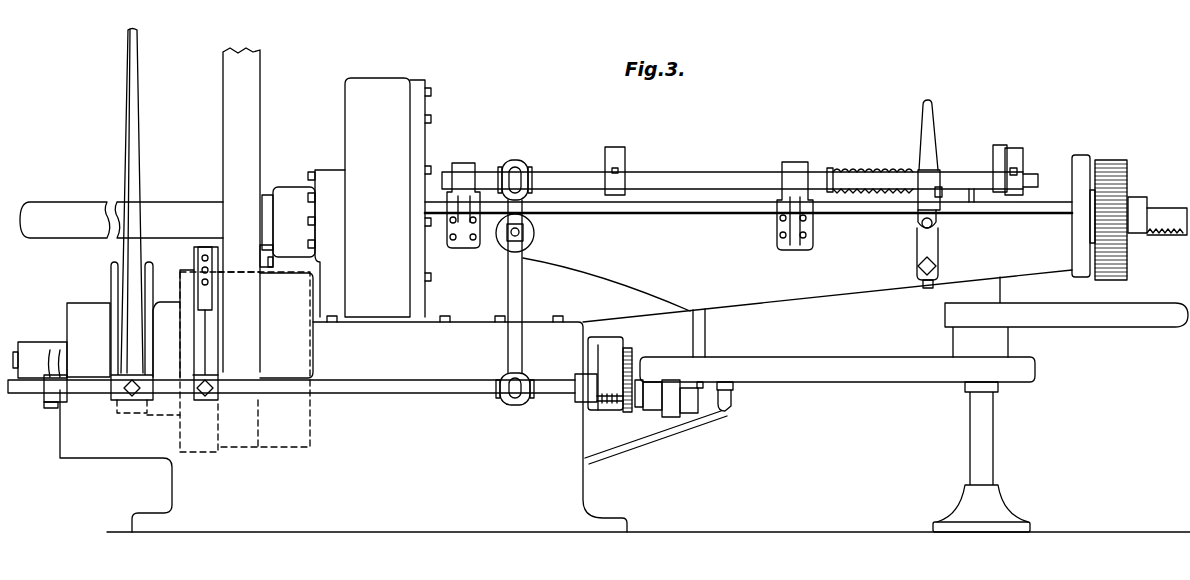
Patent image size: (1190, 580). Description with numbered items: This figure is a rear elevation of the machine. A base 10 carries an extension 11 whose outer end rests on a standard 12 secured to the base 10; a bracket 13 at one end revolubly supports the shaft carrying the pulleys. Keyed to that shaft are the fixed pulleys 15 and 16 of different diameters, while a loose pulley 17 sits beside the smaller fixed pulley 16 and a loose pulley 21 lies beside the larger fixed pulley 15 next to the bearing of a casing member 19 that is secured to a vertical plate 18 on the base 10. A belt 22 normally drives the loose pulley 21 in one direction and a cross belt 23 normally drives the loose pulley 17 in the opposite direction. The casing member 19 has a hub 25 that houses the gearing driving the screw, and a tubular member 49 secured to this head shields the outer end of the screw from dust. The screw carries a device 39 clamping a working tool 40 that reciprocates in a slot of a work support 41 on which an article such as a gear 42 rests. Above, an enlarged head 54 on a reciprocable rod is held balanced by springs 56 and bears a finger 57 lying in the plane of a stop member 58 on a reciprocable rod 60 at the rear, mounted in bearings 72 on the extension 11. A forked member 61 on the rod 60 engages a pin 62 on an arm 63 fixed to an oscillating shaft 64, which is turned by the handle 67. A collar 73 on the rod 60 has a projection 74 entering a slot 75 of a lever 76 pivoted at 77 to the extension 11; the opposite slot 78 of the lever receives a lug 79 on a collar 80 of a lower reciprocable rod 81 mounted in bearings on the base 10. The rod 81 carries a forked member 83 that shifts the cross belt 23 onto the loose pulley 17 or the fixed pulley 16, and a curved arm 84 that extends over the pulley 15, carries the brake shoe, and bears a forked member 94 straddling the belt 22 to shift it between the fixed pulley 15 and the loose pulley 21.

The base 10 is at (585, 496).
The extension 11 is at (824, 295).
The standard 12 is at (994, 441).
The bracket 13 is at (30, 345).
The pulley 15 is at (190, 452).
The pulley 16 is at (167, 302).
The pulley 17 is at (80, 311).
The vertical plate 18 is at (427, 101).
The casing member 19 is at (377, 86).
The loose pulley 21 is at (298, 348).
The belt 22 is at (261, 99).
The cross belt 23 is at (139, 175).
The hub 25 is at (329, 172).
The device 39 is at (955, 192).
The working tool 40 is at (1161, 216).
The work support 41 is at (1138, 203).
The gear 42 is at (1108, 160).
The tubular member 49 is at (76, 202).
The enlarged head 54 is at (840, 168).
The springs 56 is at (870, 168).
The finger 57 is at (1000, 146).
The stop member 58 is at (1020, 152).
The reciprocable rod 60 is at (700, 171).
The forked member 61 is at (918, 214).
The pin 62 is at (932, 225).
The arm 63 is at (917, 250).
The oscillating shaft 64 is at (940, 268).
The handle 67 is at (933, 110).
The bearings 72 is at (463, 166).
The collar 73 is at (532, 170).
The projection 74 is at (515, 159).
The slot 75 is at (527, 193).
The lever 76 is at (523, 292).
The pivot 77 is at (534, 238).
The slot 78 is at (515, 406).
The projecting lug 79 is at (506, 400).
The collar 80 is at (529, 378).
The reciprocable rod 81 is at (413, 385).
The forked member 83 is at (112, 273).
The curved arm 84 is at (207, 402).
The forked member 94 is at (271, 268).